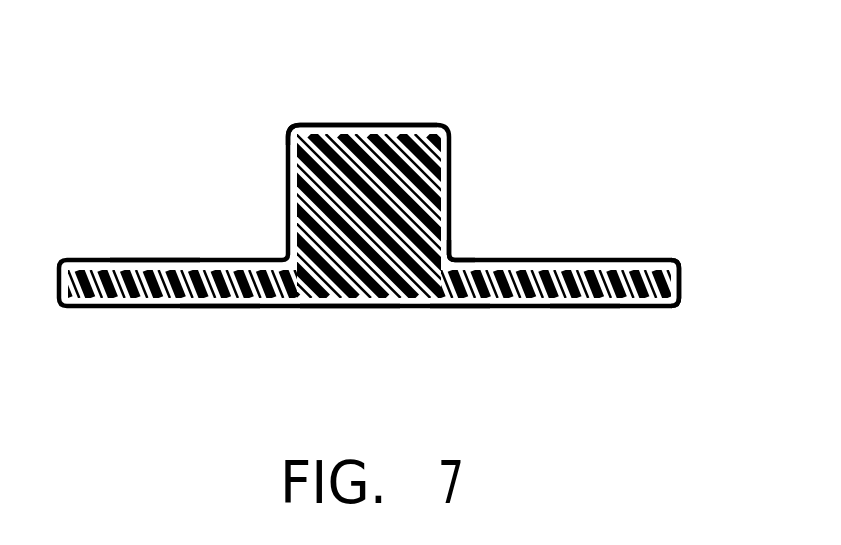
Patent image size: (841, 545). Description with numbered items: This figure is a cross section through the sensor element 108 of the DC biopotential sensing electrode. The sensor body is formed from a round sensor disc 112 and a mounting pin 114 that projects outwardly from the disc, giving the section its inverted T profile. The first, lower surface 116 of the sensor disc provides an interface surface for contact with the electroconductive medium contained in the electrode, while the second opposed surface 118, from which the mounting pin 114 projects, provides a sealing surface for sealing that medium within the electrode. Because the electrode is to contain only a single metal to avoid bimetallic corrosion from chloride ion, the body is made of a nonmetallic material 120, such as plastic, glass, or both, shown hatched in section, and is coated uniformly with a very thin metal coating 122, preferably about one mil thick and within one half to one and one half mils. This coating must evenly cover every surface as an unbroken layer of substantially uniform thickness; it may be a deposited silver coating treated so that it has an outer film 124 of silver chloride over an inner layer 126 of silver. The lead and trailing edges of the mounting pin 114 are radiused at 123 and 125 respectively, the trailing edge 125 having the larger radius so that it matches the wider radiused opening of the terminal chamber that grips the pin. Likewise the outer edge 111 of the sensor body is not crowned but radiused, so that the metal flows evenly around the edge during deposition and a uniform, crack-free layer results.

The sensor element 108 is at (463, 117).
The outer edge 111 is at (690, 288).
The sensor disc 112 is at (582, 277).
The mounting pin 114 is at (413, 188).
The first, lower surface 116 is at (222, 310).
The second opposed surface 118 is at (132, 262).
The nonmetallic material 120 is at (344, 287).
The metal coating 122 is at (363, 125).
The radiused lead edge 123 is at (292, 133).
The outer film 124 is at (583, 308).
The radiused trailing edge 125 is at (451, 258).
The inner layer 126 is at (455, 297).